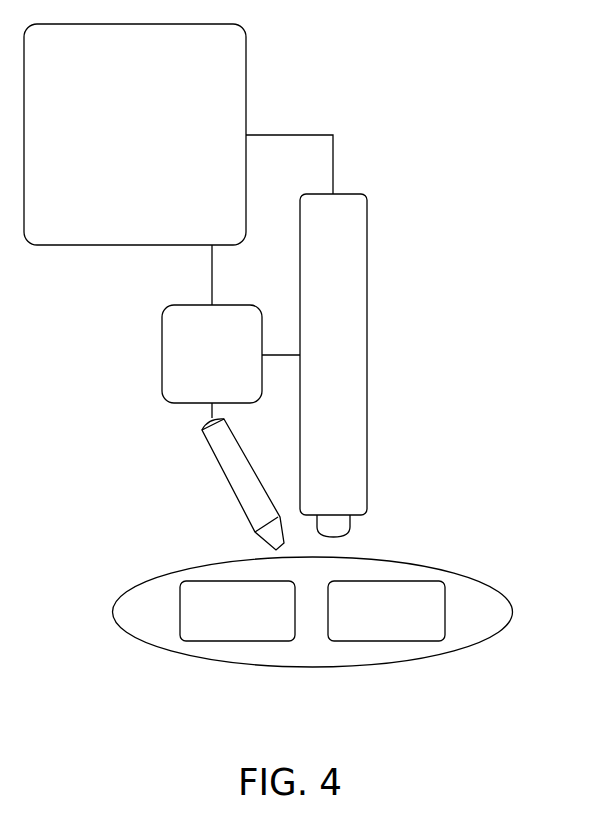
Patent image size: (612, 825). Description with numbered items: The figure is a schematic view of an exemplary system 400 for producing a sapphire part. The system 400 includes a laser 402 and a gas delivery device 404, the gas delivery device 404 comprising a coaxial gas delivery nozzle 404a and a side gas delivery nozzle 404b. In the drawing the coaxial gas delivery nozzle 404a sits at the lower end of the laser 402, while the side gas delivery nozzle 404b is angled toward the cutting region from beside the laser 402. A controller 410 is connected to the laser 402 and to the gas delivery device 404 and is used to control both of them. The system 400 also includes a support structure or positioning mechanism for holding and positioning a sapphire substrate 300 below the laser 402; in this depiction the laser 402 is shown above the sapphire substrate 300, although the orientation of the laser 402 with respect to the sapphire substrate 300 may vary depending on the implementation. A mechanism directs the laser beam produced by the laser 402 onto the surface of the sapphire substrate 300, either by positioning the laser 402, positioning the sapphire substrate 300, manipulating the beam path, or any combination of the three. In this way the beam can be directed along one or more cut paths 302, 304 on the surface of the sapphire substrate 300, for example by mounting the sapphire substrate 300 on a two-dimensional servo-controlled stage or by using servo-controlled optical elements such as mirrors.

The system 400 is at (510, 98).
The controller 410 is at (157, 145).
The gas delivery device 404 is at (233, 361).
The laser 402 is at (367, 429).
The coaxial gas delivery nozzle 404a is at (367, 520).
The side gas delivery nozzle 404b is at (223, 500).
The sapphire substrate 300 is at (468, 577).
The cut path 302 is at (208, 642).
The cut path 304 is at (395, 580).